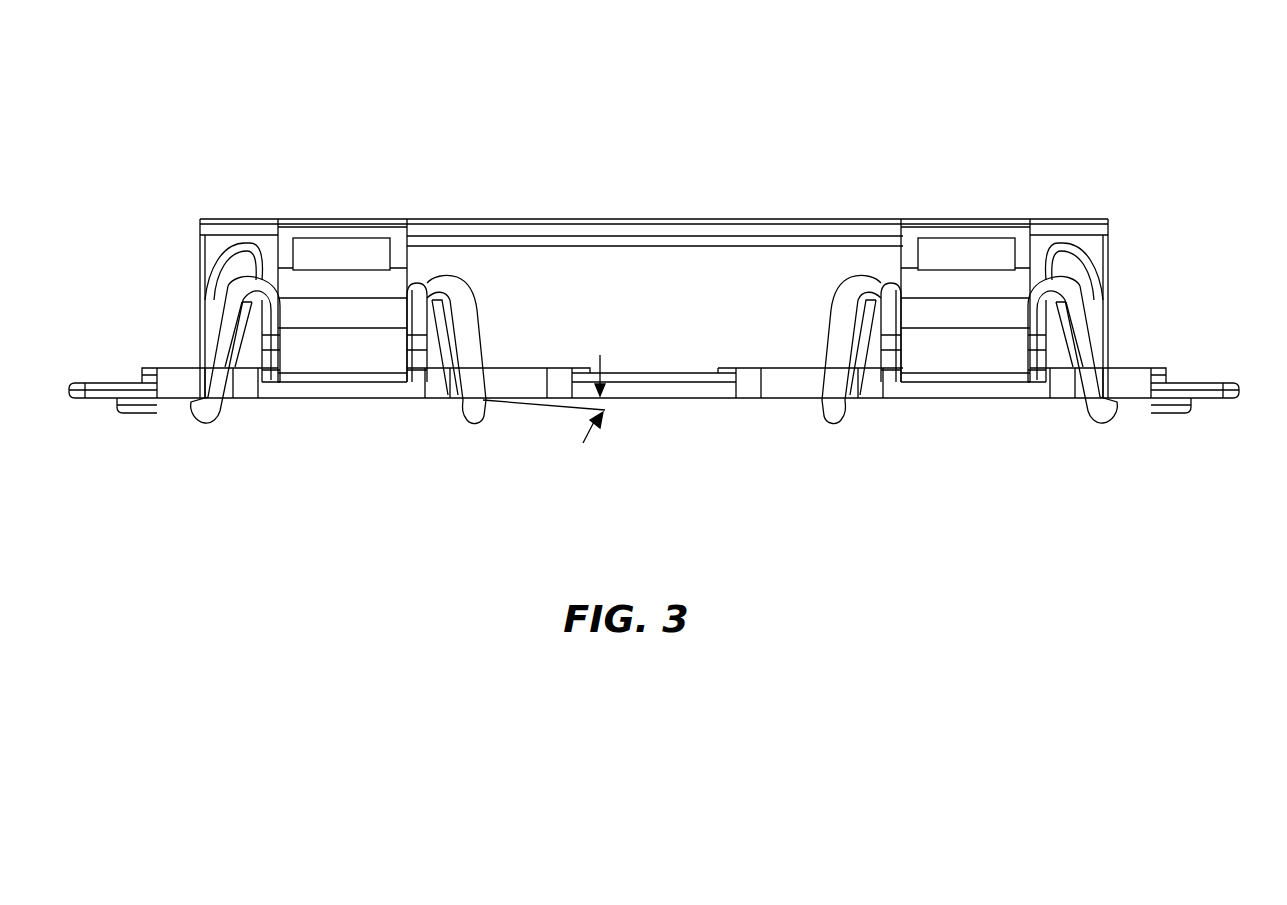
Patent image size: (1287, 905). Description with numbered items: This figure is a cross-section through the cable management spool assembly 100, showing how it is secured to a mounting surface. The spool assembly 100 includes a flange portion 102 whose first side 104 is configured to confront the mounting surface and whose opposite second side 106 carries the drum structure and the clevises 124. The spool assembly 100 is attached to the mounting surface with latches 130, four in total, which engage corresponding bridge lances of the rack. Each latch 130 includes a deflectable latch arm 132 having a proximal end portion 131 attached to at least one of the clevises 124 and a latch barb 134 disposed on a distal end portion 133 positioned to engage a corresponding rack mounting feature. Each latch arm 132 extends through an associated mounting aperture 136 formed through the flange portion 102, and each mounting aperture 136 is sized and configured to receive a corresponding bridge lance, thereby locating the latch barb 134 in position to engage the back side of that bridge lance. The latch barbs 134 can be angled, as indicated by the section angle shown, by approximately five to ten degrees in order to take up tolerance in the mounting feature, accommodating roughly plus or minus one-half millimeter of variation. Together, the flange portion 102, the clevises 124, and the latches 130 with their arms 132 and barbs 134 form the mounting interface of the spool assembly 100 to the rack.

The spool assembly 100 is at (298, 88).
The flange portion 102 is at (1222, 382).
The first side 104 is at (648, 400).
The second side 106 is at (656, 375).
The clevises 124 is at (893, 280).
The latches 130 is at (232, 400).
The proximal end portion 131 is at (871, 270).
The deflectable latch arm 132 is at (1085, 345).
The distal end portion 133 is at (832, 420).
The latch barb 134 is at (1135, 417).
The mounting aperture 136 is at (177, 372).